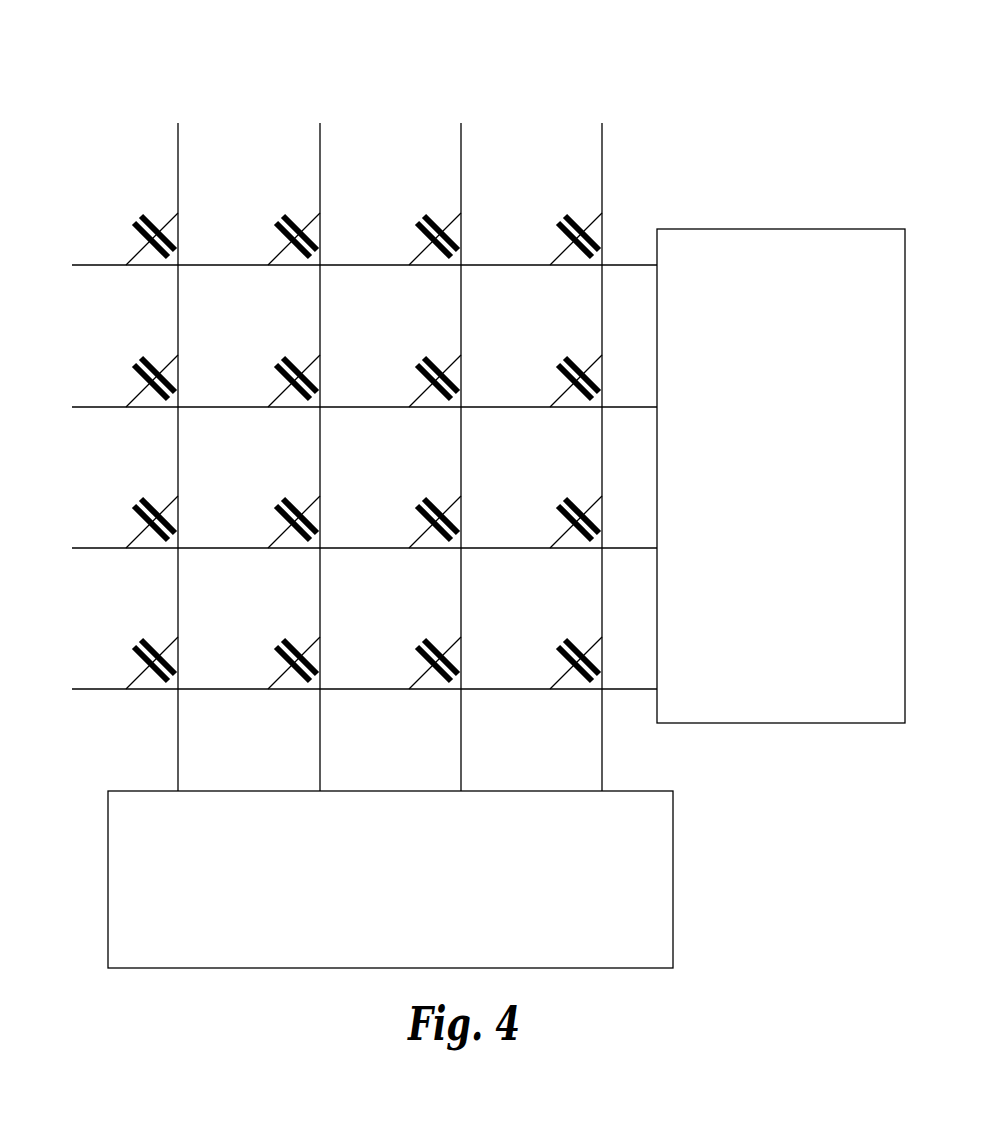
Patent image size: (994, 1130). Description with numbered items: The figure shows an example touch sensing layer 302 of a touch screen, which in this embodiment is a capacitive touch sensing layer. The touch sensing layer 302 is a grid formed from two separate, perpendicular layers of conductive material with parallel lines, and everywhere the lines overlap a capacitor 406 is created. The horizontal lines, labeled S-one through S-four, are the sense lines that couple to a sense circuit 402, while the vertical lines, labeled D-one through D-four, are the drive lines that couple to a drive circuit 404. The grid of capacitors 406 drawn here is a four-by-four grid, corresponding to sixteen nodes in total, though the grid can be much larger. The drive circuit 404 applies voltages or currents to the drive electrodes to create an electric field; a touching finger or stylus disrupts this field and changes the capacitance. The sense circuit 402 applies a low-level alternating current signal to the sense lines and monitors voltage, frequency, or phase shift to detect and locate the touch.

The touch sensing layer 302 is at (686, 49).
The sense circuit 402 is at (750, 229).
The drive circuit 404 is at (133, 791).
The capacitor 406 is at (131, 227).